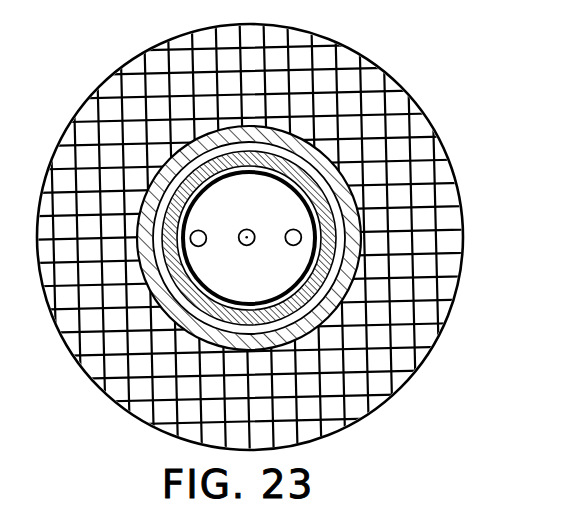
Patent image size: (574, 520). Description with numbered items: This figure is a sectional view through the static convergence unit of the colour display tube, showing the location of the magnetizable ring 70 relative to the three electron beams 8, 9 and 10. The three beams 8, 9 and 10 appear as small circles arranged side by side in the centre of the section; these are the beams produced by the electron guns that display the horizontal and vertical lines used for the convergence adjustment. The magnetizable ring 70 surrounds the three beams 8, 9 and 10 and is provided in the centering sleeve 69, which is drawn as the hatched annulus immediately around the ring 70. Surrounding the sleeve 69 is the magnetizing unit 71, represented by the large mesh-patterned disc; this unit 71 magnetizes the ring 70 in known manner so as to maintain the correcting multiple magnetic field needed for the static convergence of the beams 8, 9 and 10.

The magnetizing unit 71 is at (428, 219).
The centering sleeve 69 is at (312, 197).
The magnetizable ring 70 is at (255, 170).
The electron beam 8 is at (206, 245).
The electron beam 9 is at (254, 245).
The electron beam 10 is at (287, 245).